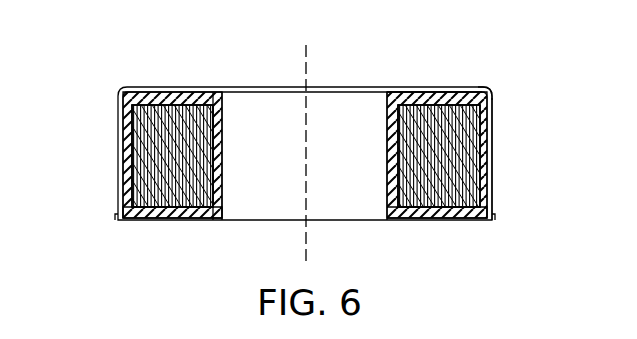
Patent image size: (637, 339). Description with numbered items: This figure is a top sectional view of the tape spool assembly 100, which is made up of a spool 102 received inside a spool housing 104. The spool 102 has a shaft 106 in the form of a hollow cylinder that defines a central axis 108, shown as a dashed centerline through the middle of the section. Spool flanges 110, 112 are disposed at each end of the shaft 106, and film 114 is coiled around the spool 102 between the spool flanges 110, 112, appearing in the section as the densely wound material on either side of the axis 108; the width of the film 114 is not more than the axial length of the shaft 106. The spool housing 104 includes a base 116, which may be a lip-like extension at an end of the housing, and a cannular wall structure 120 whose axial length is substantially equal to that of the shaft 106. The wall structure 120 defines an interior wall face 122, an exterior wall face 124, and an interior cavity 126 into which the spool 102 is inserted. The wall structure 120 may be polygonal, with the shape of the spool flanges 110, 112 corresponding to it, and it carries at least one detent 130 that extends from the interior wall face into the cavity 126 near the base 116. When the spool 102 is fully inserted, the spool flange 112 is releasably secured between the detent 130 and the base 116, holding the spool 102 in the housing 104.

The spool assembly 100 is at (92, 91).
The spool 102 is at (165, 223).
The spool housing 104 is at (103, 188).
The shaft 106 is at (214, 221).
The axis 108 is at (310, 240).
The spool flange 110 is at (430, 222).
The spool flange 112 is at (437, 95).
The film 114 is at (137, 133).
The base 116 is at (133, 87).
The cannular wall structure 120 is at (491, 104).
The interior wall face 122 is at (473, 160).
The exterior wall face 124 is at (492, 194).
The interior cavity 126 is at (485, 92).
The detent 130 is at (388, 118).